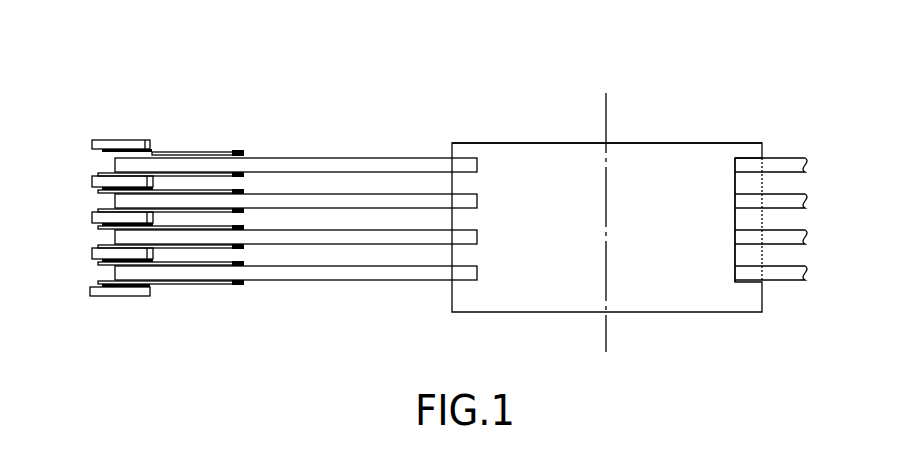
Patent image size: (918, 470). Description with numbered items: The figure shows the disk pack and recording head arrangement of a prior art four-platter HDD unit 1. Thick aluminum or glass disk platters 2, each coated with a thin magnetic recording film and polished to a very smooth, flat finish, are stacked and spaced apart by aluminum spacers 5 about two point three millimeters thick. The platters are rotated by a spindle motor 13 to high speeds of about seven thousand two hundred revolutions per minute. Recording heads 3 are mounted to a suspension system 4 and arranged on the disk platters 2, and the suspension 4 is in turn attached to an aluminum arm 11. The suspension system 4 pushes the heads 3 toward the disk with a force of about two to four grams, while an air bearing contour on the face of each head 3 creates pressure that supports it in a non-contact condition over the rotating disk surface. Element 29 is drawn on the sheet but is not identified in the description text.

The HDD unit 1 is at (642, 77).
The disk platter 2 is at (377, 158).
The recording head 3 is at (235, 152).
The suspension system 4 is at (167, 152).
The aluminum spacer 5 is at (748, 186).
The aluminum arm 11 is at (94, 146).
The spindle motor 13 is at (635, 295).
The housing wall 29 is at (670, 143).